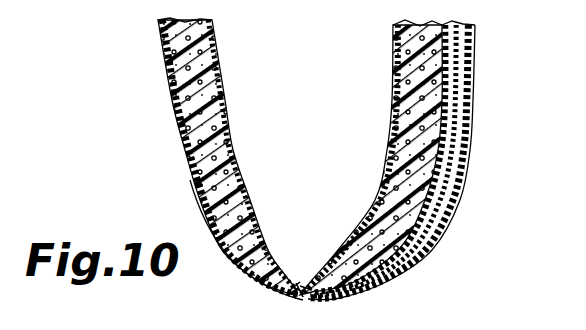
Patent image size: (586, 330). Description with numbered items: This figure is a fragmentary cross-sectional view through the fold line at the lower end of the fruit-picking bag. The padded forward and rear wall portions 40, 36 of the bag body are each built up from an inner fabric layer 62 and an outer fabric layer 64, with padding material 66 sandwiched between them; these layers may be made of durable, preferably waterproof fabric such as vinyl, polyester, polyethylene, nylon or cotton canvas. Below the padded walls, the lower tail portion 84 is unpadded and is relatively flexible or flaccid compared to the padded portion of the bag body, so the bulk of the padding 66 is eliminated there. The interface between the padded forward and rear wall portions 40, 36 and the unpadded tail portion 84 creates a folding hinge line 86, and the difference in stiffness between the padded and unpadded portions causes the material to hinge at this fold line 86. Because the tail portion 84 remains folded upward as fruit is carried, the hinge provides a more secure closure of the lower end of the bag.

The rear wall portion 36 is at (243, 180).
The forward wall portion 40 is at (390, 85).
The inner fabric layer 62 is at (220, 53).
The outer fabric layer 64 is at (160, 64).
The padding material 66 is at (173, 117).
The lower tail portion 84 is at (433, 242).
The folding hinge line 86 is at (300, 262).